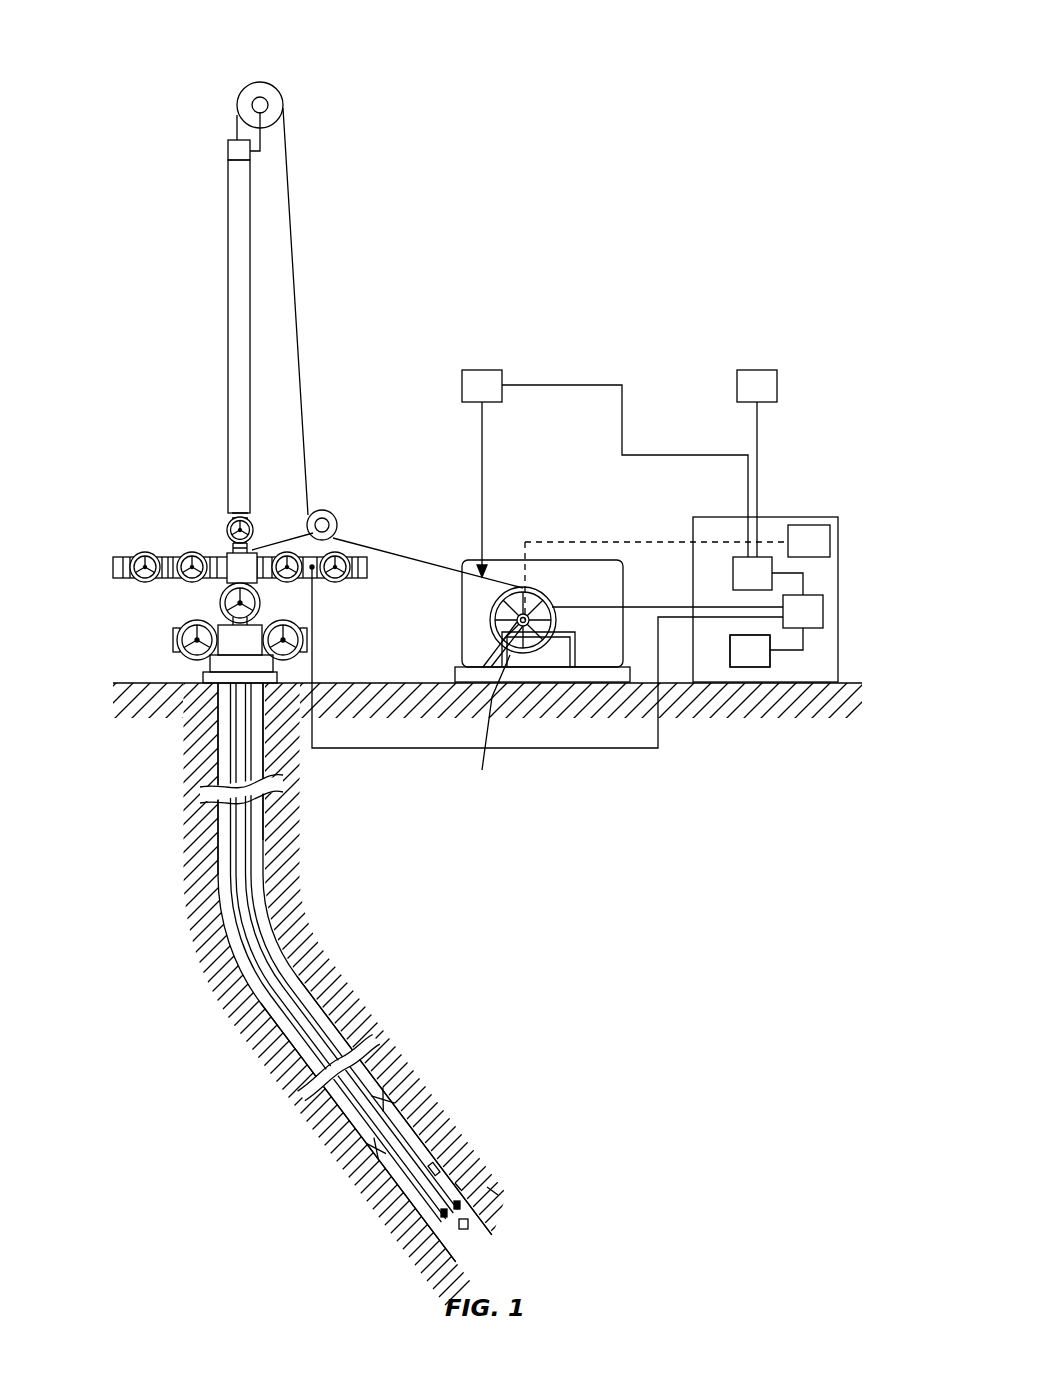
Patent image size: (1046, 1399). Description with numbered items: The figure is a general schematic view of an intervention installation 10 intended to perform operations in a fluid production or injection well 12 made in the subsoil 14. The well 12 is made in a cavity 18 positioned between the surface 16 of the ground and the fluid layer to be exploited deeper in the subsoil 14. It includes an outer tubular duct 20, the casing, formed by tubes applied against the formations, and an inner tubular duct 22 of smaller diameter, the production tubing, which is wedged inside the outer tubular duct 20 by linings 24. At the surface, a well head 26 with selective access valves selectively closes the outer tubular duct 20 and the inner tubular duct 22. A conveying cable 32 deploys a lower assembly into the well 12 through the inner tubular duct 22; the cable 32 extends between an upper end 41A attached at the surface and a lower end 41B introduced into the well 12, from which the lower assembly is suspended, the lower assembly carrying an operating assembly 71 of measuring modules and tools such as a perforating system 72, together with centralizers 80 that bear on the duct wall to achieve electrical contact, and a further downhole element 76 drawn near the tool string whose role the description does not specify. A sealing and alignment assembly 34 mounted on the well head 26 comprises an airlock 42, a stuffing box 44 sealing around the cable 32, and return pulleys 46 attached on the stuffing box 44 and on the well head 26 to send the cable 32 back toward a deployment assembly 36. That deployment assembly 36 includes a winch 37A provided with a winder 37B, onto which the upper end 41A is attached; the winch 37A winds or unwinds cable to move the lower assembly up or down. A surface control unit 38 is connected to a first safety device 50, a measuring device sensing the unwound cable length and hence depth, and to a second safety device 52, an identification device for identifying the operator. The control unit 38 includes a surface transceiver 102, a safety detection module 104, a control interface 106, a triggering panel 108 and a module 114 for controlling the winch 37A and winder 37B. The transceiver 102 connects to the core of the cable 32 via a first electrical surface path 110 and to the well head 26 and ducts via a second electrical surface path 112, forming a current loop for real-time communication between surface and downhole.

The intervention installation 10 is at (455, 292).
The fluid production or injection well 12 is at (190, 767).
The subsoil 14 is at (147, 950).
The surface of the ground 16 is at (140, 683).
The cavity 18 is at (225, 847).
The outer tubular duct 20 is at (266, 823).
The inner tubular duct 22 is at (290, 983).
The linings 24 is at (421, 1122).
The well head 26 is at (194, 522).
The conveying cable 32 is at (257, 867).
The sealing and alignment assembly 34 is at (326, 214).
The deployment assembly 36 is at (500, 540).
The winch 37A is at (493, 652).
The winder 37B is at (485, 729).
The surface control unit 38 is at (773, 508).
The upper end of the cable 41A is at (516, 618).
The lower end of the cable 41B is at (443, 1165).
The airlock 42 is at (228, 275).
The stuffing box 44 is at (228, 150).
The return pulleys 46 is at (272, 88).
The first safety device 50 is at (471, 399).
The second safety device 52 is at (746, 399).
The operating assembly 71 is at (465, 1180).
The perforating system 72 is at (443, 1230).
The sensor 76 is at (498, 1182).
The centralizers 80 is at (462, 1205).
The surface transceiver 102 is at (823, 612).
The safety detection module 104 is at (741, 557).
The control interface 106 is at (750, 667).
The triggering panel 108 is at (750, 651).
The first electrical surface path 110 is at (583, 607).
The second electrical surface path 112 is at (713, 617).
The winch control module 114 is at (830, 540).